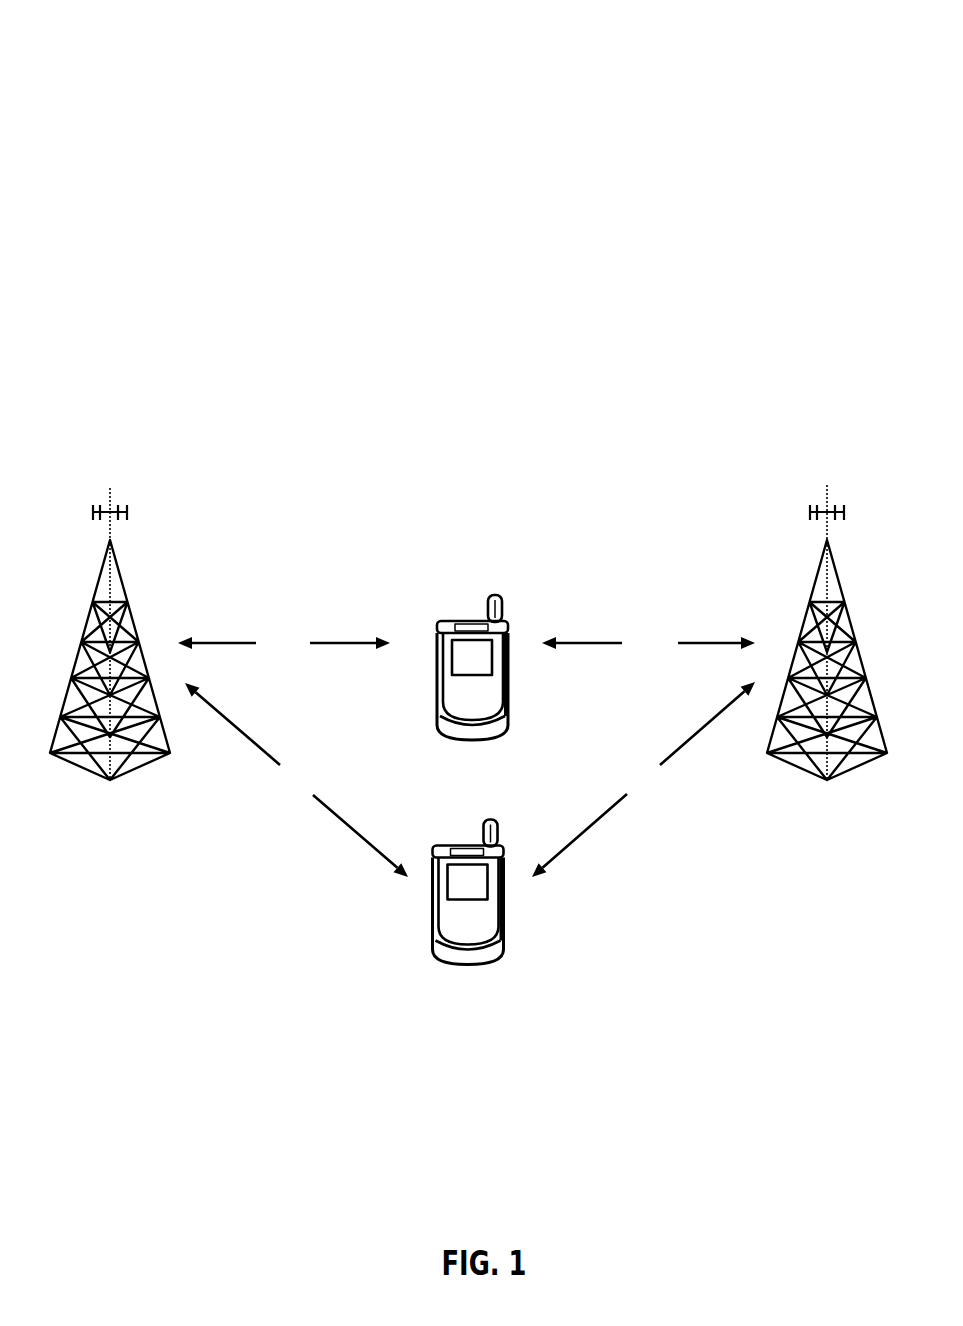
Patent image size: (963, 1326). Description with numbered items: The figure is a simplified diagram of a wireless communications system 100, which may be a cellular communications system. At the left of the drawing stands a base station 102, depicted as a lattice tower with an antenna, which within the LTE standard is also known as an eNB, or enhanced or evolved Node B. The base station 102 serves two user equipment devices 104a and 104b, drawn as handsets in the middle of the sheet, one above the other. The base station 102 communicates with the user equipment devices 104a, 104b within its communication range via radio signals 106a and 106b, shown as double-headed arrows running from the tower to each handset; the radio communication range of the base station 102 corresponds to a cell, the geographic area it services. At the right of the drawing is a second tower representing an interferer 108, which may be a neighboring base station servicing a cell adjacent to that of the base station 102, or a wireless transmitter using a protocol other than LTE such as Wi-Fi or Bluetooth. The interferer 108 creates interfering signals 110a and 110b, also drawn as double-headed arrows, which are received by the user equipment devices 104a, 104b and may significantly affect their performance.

The wireless communications system 100 is at (496, 42).
The base station 102 is at (82, 527).
The user equipment device 104a is at (507, 607).
The user equipment device 104b is at (507, 858).
The radio signal 106a is at (284, 644).
The radio signal 106b is at (296, 780).
The interferer 108 is at (802, 542).
The interfering signal 110a is at (648, 644).
The interfering signal 110b is at (643, 779).